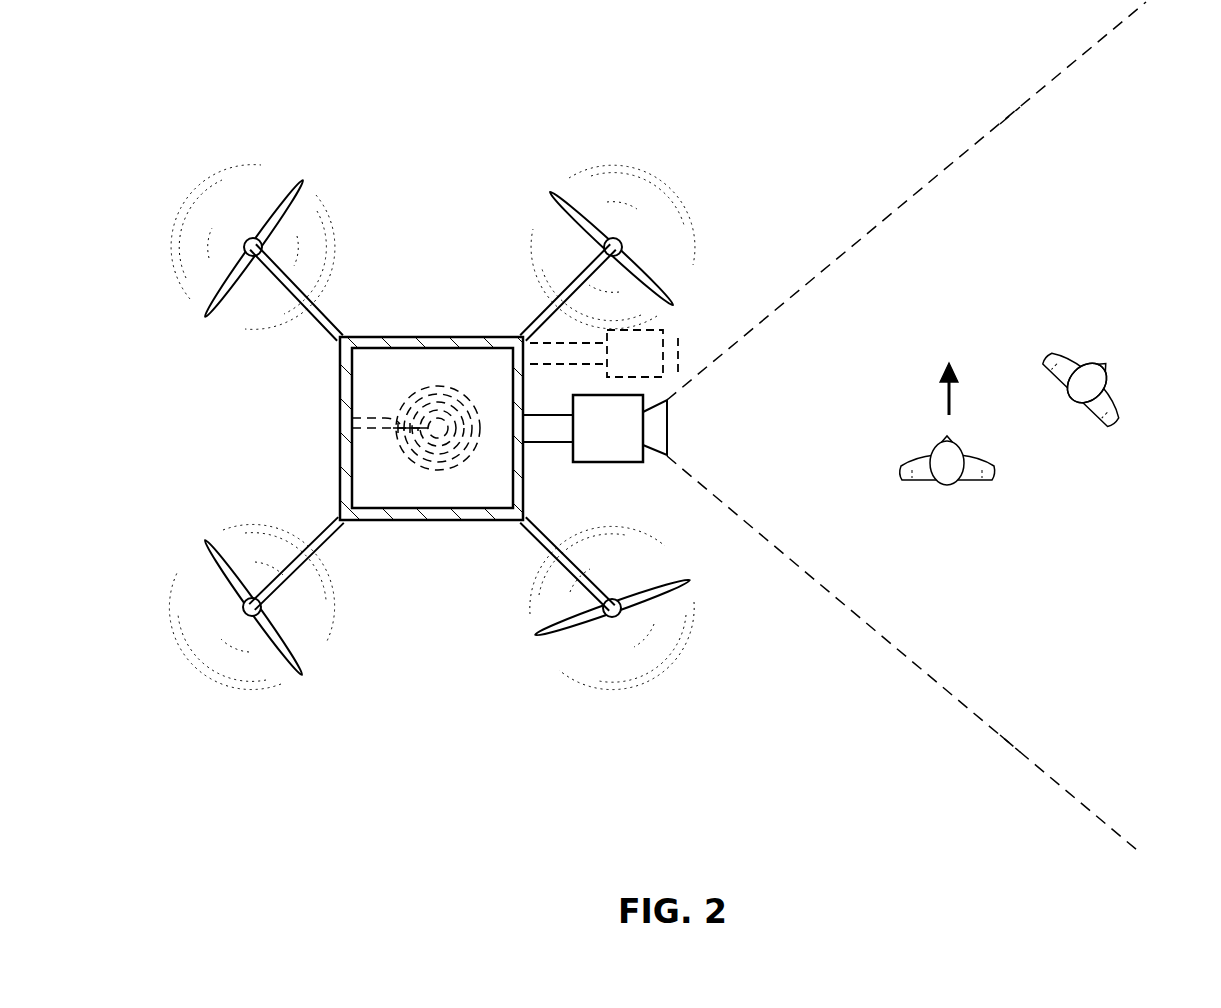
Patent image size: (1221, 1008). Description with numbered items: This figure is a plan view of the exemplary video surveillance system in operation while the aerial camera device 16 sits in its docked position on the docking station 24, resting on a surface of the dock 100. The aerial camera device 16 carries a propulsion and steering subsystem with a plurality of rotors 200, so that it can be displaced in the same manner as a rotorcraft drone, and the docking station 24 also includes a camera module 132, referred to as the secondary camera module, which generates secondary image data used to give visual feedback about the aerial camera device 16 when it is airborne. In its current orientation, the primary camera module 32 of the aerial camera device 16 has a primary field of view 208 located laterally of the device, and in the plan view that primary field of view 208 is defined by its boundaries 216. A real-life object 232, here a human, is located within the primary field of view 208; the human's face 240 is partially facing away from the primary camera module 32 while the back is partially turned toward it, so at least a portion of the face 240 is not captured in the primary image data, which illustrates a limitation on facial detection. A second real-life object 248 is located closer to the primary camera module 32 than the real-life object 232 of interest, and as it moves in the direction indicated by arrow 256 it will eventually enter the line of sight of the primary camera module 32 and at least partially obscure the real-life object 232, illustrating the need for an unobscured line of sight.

The aerial camera device 16 is at (350, 386).
The docking station 24 is at (395, 337).
The dock 100 is at (457, 337).
The primary camera module 32 is at (608, 450).
The camera module 132 is at (678, 350).
The rotors 200 is at (298, 192).
The primary field of view 208 is at (813, 372).
The boundaries 216 is at (1013, 112).
The real-life object 232 is at (1112, 420).
The face 240 is at (1112, 358).
The second real-life object 248 is at (950, 482).
The arrow 256 is at (953, 398).